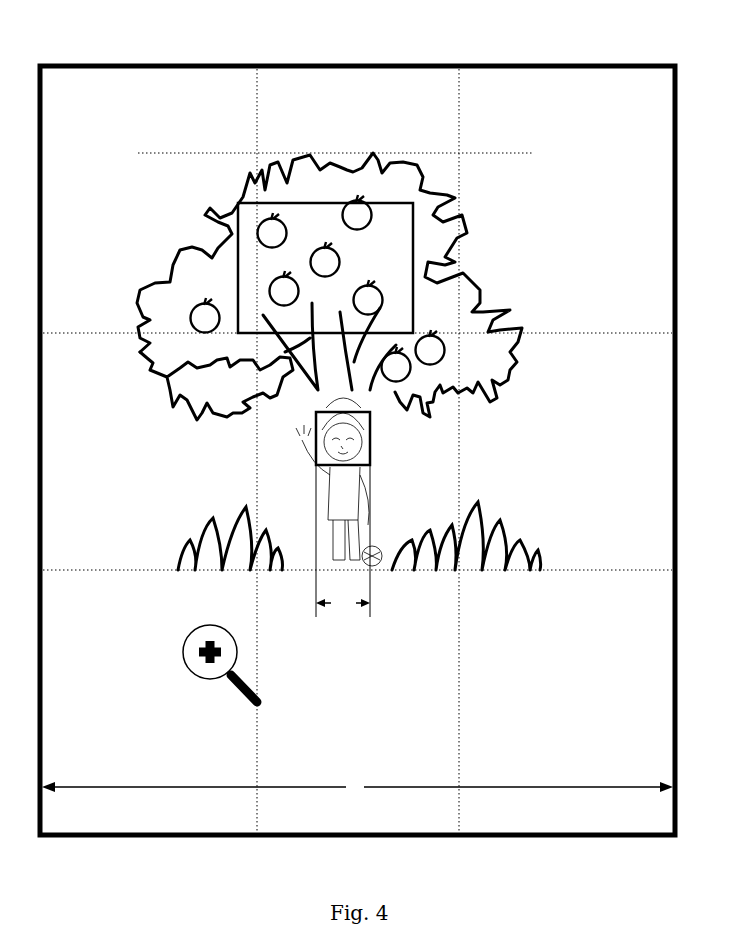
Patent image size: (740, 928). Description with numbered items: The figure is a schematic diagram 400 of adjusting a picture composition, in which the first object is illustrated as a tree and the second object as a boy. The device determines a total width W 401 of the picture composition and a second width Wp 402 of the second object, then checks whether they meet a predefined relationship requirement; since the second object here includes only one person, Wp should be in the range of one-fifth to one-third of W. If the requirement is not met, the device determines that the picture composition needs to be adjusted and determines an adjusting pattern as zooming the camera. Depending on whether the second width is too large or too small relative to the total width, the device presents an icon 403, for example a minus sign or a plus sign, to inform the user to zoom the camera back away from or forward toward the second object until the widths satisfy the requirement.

The image 400 is at (121, 28).
The total width W 401 is at (361, 770).
The person width Wp 402 is at (350, 617).
The icon 403 is at (210, 624).